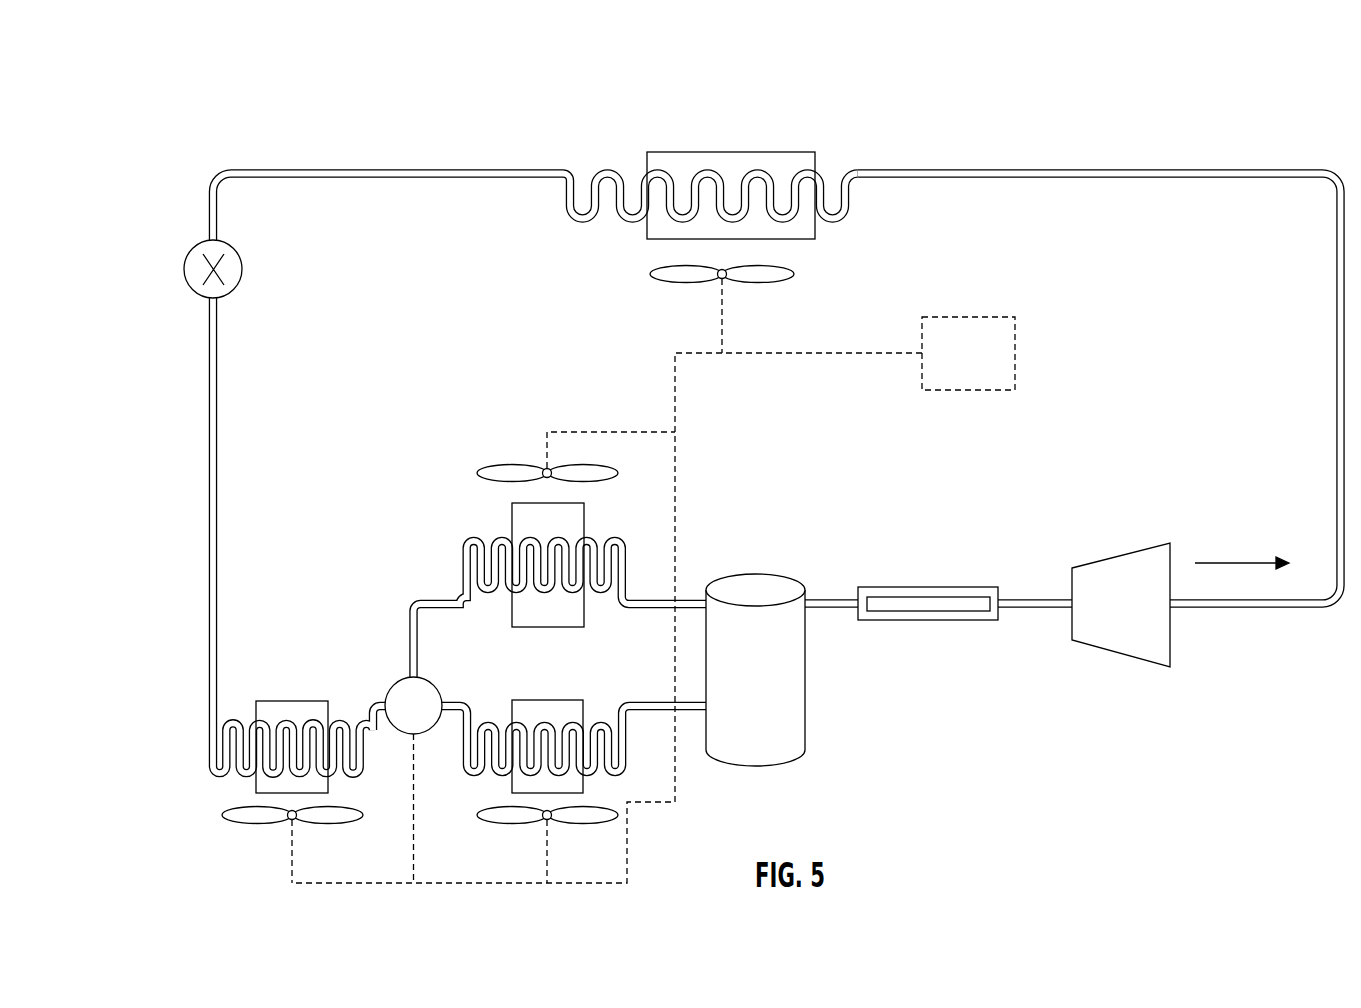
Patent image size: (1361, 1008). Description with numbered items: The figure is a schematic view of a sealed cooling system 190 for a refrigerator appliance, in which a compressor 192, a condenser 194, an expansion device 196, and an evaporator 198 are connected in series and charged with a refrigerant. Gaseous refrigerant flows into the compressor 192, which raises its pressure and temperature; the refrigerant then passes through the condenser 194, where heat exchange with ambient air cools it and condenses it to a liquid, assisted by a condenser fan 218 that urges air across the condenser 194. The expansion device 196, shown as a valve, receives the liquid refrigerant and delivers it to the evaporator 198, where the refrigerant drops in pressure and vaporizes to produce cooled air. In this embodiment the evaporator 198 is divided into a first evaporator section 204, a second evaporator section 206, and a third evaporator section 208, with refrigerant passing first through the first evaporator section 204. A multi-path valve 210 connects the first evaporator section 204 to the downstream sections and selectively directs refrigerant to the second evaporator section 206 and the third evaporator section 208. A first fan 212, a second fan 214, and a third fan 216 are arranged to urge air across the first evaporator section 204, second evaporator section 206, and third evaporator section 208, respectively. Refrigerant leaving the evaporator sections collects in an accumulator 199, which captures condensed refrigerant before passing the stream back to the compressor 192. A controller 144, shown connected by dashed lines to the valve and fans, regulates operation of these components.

The controller 144 is at (1005, 318).
The sealed cooling system 190 is at (336, 98).
The compressor 192 is at (1173, 633).
The condenser 194 is at (822, 172).
The expansion device 196 is at (243, 268).
The evaporator 198 is at (350, 834).
The accumulator 199 is at (755, 585).
The first evaporator section 204 is at (290, 723).
The second evaporator section 206 is at (543, 720).
The third evaporator section 208 is at (535, 540).
The multi-path valve 210 is at (422, 724).
The first fan 212 is at (222, 812).
The second fan 214 is at (508, 818).
The third fan 216 is at (508, 466).
The condenser fan 218 is at (792, 279).